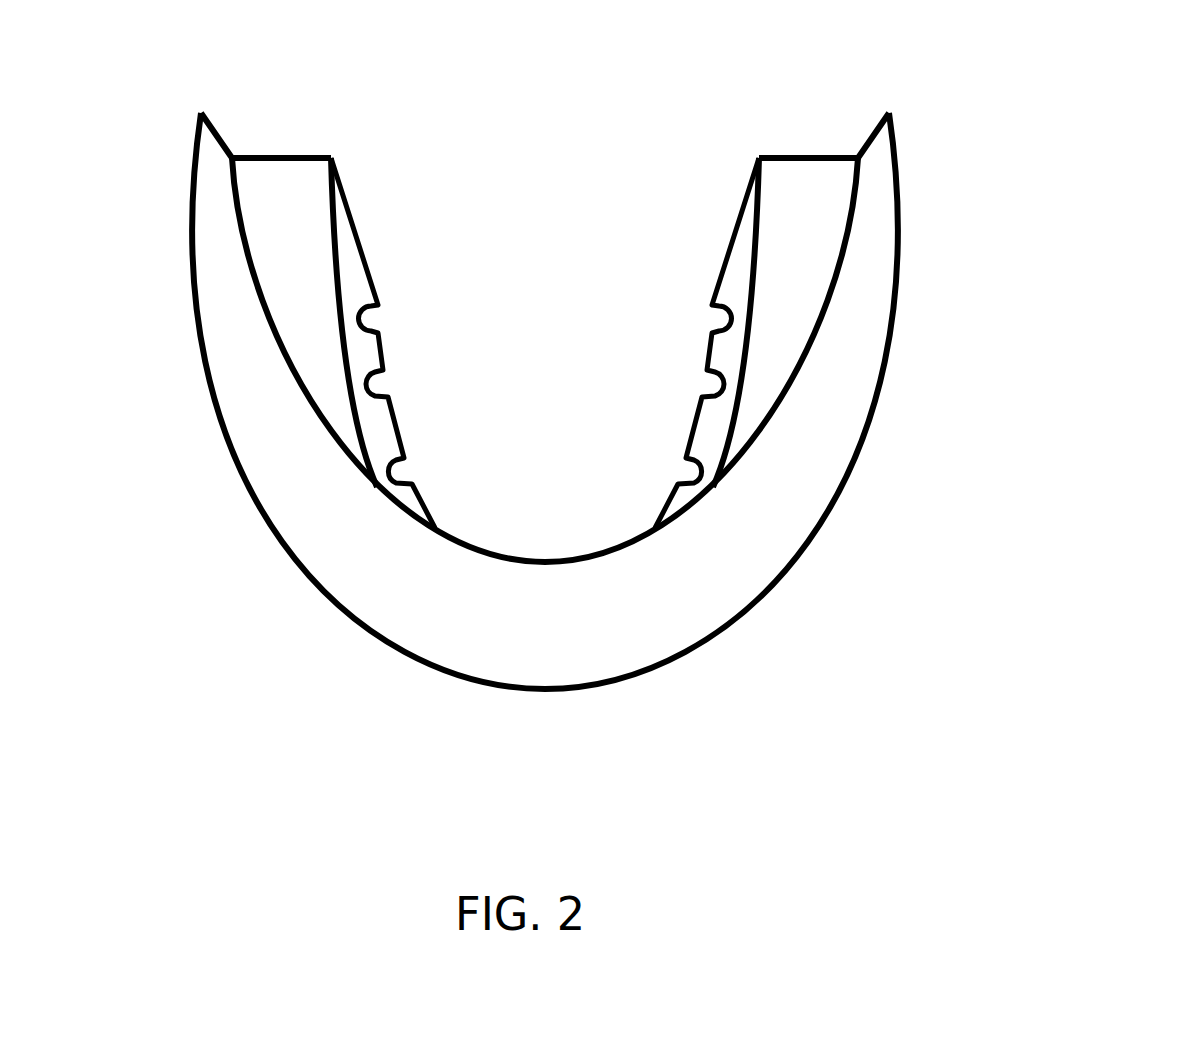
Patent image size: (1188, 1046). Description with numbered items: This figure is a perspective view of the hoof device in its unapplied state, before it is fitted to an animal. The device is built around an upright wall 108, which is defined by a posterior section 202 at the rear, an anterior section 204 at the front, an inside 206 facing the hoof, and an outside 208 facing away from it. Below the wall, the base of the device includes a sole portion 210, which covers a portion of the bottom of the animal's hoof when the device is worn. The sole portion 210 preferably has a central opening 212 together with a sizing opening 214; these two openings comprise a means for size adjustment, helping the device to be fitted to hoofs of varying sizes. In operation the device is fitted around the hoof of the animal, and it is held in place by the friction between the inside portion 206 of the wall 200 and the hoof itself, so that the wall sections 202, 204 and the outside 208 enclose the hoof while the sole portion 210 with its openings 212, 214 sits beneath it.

The wall 200 is at (363, 350).
The wall 108 is at (797, 470).
The posterior section 202 is at (208, 117).
The anterior section 204 is at (558, 672).
The outside 208 is at (897, 307).
The inside 206 is at (270, 302).
The sole portion 210 is at (700, 412).
The central opening 212 is at (652, 383).
The sizing opening 214 is at (700, 198).